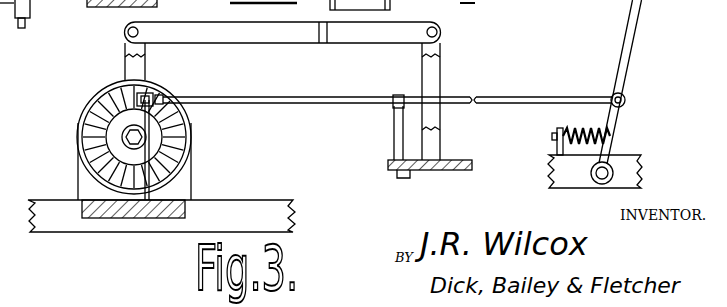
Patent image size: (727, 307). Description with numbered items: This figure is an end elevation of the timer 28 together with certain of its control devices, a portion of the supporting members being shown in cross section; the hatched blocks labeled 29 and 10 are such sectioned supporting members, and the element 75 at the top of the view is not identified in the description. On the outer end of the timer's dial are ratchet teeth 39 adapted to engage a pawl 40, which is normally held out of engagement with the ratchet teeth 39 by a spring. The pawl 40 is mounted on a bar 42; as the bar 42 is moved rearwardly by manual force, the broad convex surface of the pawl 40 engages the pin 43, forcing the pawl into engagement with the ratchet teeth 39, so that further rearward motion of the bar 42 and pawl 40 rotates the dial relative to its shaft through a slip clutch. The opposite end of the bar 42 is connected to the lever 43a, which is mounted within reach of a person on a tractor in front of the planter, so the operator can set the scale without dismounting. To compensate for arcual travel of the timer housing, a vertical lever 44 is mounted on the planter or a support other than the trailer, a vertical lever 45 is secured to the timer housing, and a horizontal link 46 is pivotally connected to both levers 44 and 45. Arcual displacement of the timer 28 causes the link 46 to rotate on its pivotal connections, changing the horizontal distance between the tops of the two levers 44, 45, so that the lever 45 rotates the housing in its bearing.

The base plate 10 is at (441, 172).
The timer 28 is at (87, 89).
The support block 29 is at (131, 218).
The ratchet teeth 39 is at (92, 119).
The pawl 40 is at (152, 93).
The bar 42 is at (294, 103).
The pin 43 is at (175, 159).
The lever 43a is at (633, 52).
The vertical lever 44 is at (422, 68).
The vertical lever 45 is at (127, 67).
The horizontal link 46 is at (254, 43).
The housing 75 is at (360, 5).